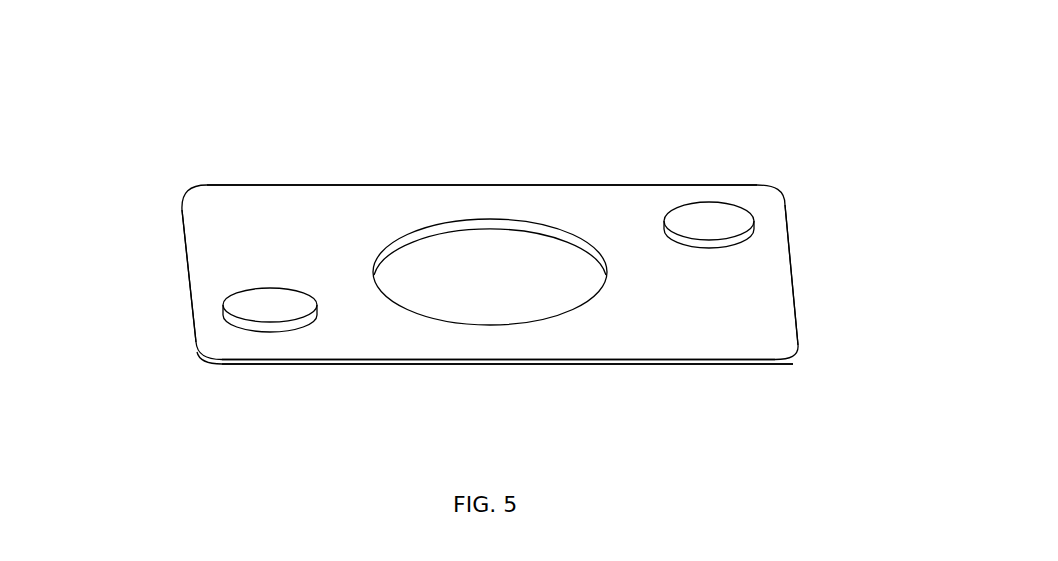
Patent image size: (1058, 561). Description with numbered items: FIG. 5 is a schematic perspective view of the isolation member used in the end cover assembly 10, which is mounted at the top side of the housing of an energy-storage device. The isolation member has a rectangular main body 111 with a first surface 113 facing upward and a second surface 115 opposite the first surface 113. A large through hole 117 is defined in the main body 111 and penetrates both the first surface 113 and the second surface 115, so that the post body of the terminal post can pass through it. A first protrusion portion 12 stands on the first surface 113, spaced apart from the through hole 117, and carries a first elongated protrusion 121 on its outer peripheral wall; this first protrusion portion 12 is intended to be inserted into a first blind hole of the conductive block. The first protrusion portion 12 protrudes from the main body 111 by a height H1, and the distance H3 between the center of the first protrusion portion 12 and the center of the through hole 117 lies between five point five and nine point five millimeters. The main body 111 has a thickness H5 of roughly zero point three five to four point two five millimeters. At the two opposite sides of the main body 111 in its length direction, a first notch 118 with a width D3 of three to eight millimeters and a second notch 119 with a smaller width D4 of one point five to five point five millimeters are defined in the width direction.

The end cover assembly 10 is at (327, 66).
The first surface 113 is at (233, 203).
The through hole 117 is at (530, 247).
The second notch 119 is at (190, 258).
The first notch 118 is at (793, 283).
The main body 111 is at (470, 348).
The second surface 115 is at (707, 368).
The first protrusion portion 12 is at (307, 323).
The first elongated protrusion 121 is at (273, 331).
The distance H3 is at (487, 272).
The width D4 is at (188, 256).
The height H1 is at (272, 324).
The width D3 is at (788, 248).
The thickness H5 is at (797, 362).